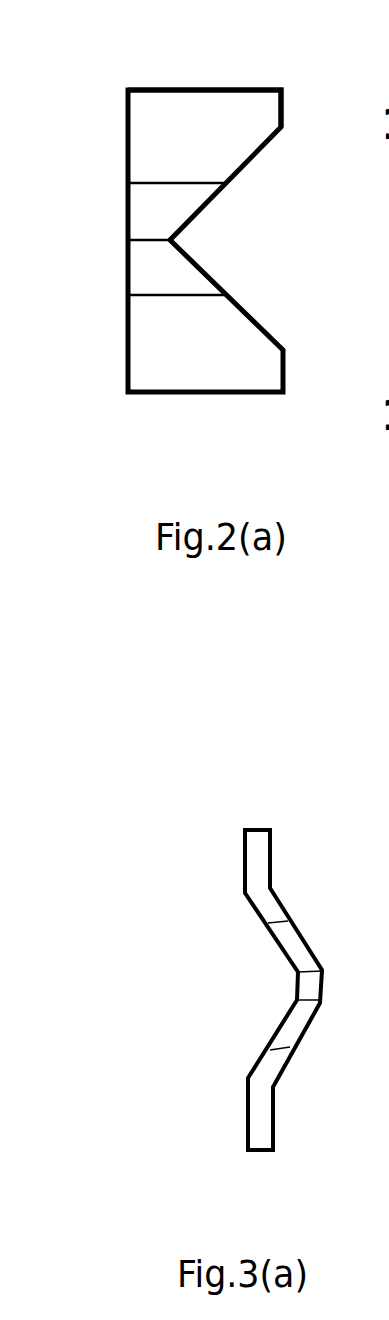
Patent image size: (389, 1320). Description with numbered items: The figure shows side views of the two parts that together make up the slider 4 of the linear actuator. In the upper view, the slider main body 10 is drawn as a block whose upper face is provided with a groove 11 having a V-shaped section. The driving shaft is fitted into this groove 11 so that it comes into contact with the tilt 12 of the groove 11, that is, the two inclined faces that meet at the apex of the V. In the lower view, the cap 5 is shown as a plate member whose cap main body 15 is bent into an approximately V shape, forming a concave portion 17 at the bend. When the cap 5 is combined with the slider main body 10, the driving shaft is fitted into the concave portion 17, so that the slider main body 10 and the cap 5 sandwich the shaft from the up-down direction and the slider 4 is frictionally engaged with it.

In FIG. 2A, the slider 4 is at (118, 88).
In FIG. 2A, the slider main body 10 is at (209, 107).
In FIG. 2A, the groove 11 is at (192, 234).
In FIG. 2A, the tilt 12 is at (247, 170).
In FIG. 3A, the cap 5 is at (228, 845).
In FIG. 3A, the cap main body 15 is at (268, 901).
In FIG. 3A, the concave portion 17 is at (272, 987).